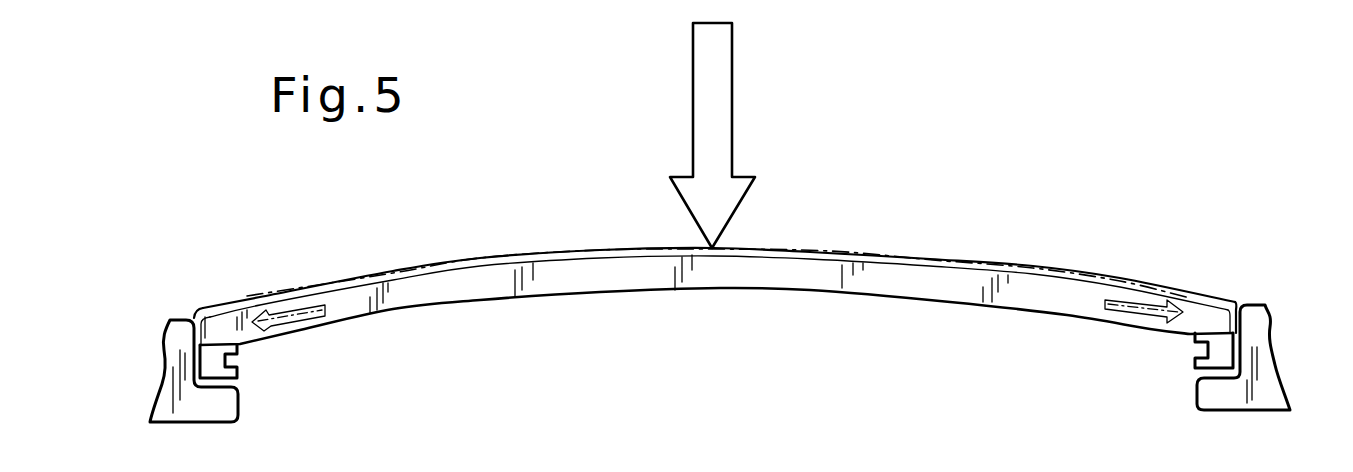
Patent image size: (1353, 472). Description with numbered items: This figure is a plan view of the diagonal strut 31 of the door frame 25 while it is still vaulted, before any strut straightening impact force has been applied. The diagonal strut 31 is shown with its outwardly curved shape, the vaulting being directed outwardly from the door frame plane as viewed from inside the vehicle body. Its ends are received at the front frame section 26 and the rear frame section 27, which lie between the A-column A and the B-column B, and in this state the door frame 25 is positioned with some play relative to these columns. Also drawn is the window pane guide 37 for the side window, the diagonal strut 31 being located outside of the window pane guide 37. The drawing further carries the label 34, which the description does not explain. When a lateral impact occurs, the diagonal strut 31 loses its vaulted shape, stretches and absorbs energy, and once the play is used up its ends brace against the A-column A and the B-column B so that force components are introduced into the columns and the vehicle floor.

The center line of panel 25 is at (843, 252).
The right edge of panel 26 is at (1222, 355).
The left edge of panel 27 is at (212, 358).
The panel body 31 is at (955, 278).
The top surface layer of panel 34 is at (1067, 270).
The groove 37 is at (236, 360).
The right support bracket A is at (1247, 395).
The left support bracket B is at (183, 398).